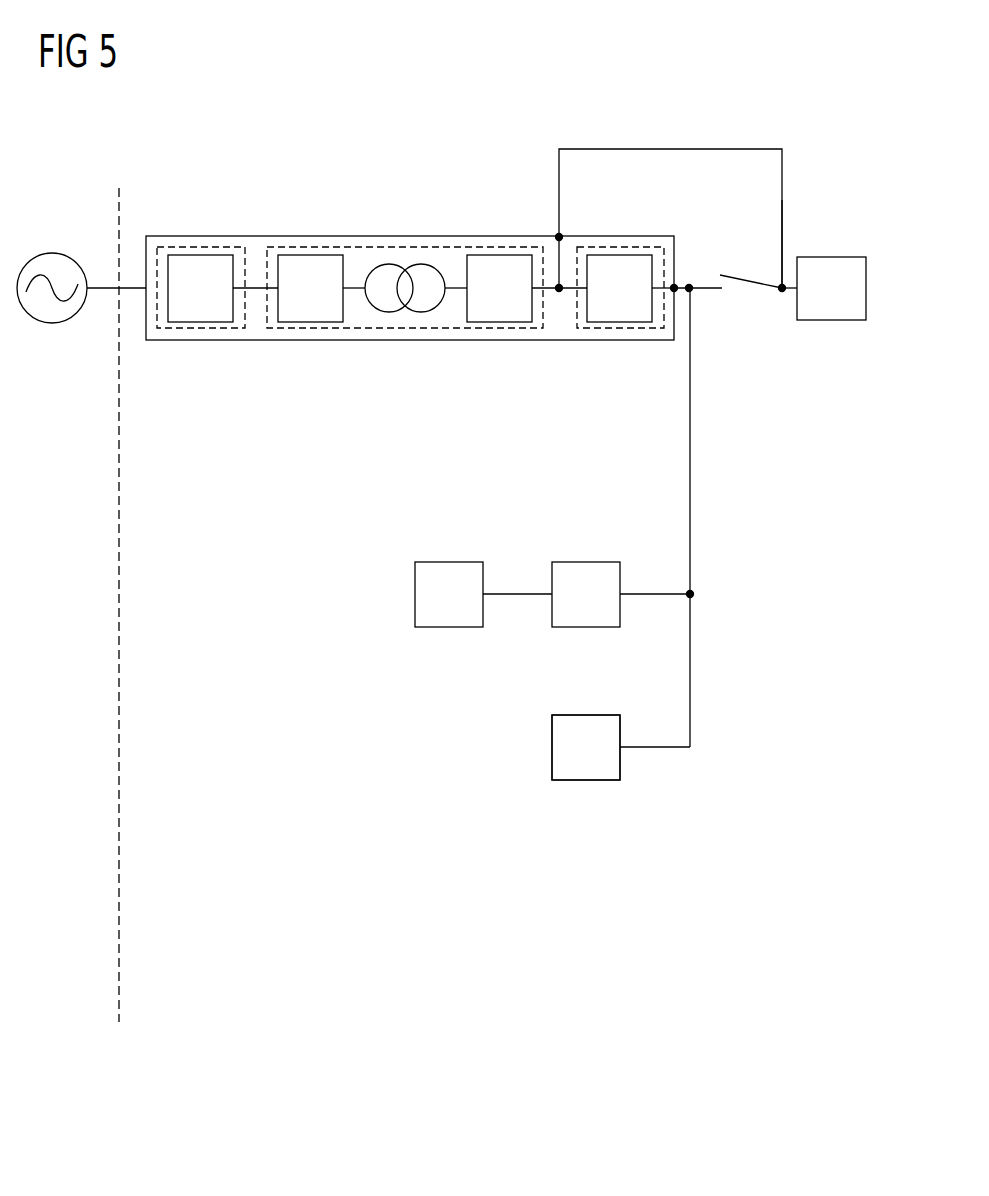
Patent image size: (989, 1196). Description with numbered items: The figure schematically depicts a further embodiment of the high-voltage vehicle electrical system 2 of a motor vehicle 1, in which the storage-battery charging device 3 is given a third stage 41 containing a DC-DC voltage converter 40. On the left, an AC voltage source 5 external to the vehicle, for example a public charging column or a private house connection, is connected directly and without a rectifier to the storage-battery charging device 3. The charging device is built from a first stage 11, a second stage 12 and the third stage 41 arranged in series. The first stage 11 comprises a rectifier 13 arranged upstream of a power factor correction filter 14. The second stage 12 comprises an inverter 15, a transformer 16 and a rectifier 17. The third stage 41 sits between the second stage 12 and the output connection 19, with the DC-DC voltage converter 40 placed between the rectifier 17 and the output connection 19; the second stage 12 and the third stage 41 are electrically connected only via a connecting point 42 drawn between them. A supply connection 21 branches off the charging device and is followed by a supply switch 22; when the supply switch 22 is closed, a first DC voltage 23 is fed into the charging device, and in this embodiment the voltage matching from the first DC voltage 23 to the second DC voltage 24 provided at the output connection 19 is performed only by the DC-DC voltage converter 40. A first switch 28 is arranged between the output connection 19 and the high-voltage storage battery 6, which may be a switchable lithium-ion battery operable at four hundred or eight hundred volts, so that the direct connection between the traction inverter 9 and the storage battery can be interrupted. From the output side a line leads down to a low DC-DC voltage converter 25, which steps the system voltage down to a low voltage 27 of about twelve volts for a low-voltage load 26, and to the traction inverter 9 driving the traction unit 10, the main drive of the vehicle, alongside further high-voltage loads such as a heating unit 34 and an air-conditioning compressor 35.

The motor vehicle 1 is at (150, 985).
The high-voltage vehicle electrical system 2 is at (290, 758).
The storage-battery charging device 3 is at (404, 236).
The AC voltage source 5 is at (52, 323).
The high-voltage storage battery 6 is at (834, 257).
The traction inverter 9 is at (523, 737).
The traction unit 10 is at (523, 758).
The first stage 11 is at (195, 328).
The second stage 12 is at (452, 328).
The rectifier 13 is at (173, 322).
The power factor correction filter 14 is at (228, 322).
The inverter 15 is at (313, 322).
The transformer 16 is at (404, 313).
The rectifier 17 is at (500, 322).
The output connection 19 is at (676, 297).
The supply connection 21 is at (559, 237).
The supply switch 22 is at (780, 242).
The first DC voltage 23 is at (568, 235).
The second DC voltage 24 is at (687, 279).
The low DC-DC voltage converter 25 is at (588, 562).
The low-voltage load 26 is at (450, 562).
The low voltage 27 is at (515, 568).
The first switch 28 is at (737, 283).
The heating unit 34 is at (562, 802).
The air-conditioning compressor 35 is at (610, 802).
The DC-DC voltage converter 40 is at (618, 322).
The third stage 41 is at (640, 330).
The connecting point 42 is at (561, 293).